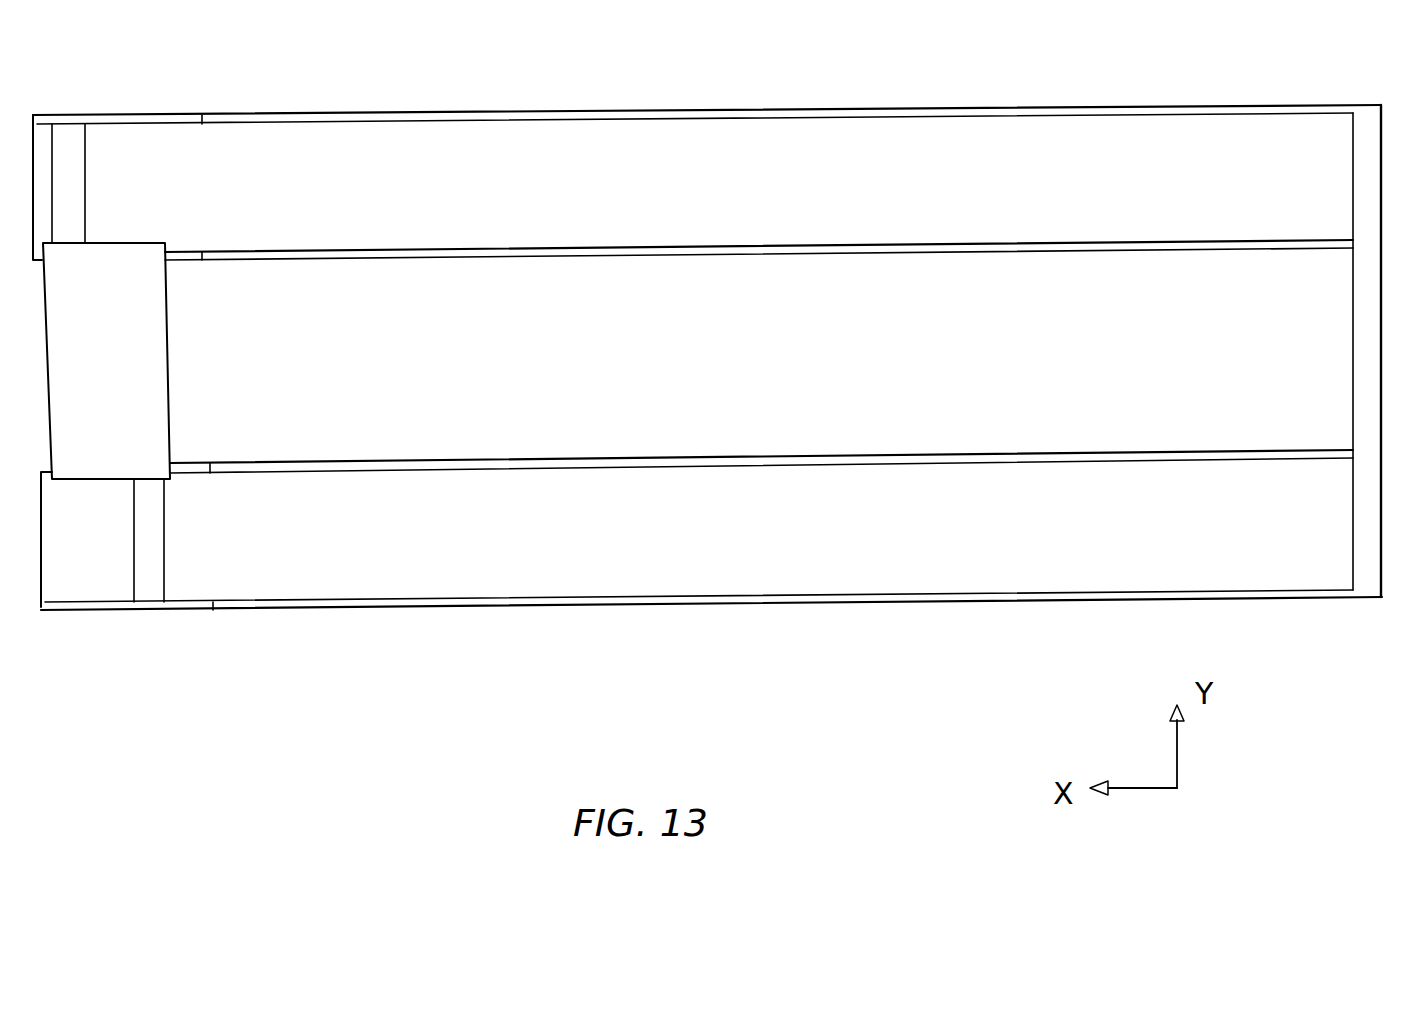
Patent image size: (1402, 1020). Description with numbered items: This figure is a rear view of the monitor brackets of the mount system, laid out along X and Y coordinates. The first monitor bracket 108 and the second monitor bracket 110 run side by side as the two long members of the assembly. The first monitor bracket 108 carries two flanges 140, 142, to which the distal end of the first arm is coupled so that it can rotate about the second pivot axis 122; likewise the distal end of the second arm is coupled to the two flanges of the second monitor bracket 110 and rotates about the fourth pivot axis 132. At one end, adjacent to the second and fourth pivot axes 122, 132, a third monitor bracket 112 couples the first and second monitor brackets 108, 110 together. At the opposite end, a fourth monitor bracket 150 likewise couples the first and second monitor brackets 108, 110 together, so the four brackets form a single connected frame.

The first monitor bracket 108 is at (712, 204).
The second monitor bracket 110 is at (678, 568).
The third monitor bracket 112 is at (137, 396).
The second pivot axis 122 is at (67, 143).
The fourth pivot axis 132 is at (160, 560).
The flange 140 is at (352, 118).
The flange 142 is at (398, 253).
The fourth monitor bracket 150 is at (1370, 350).